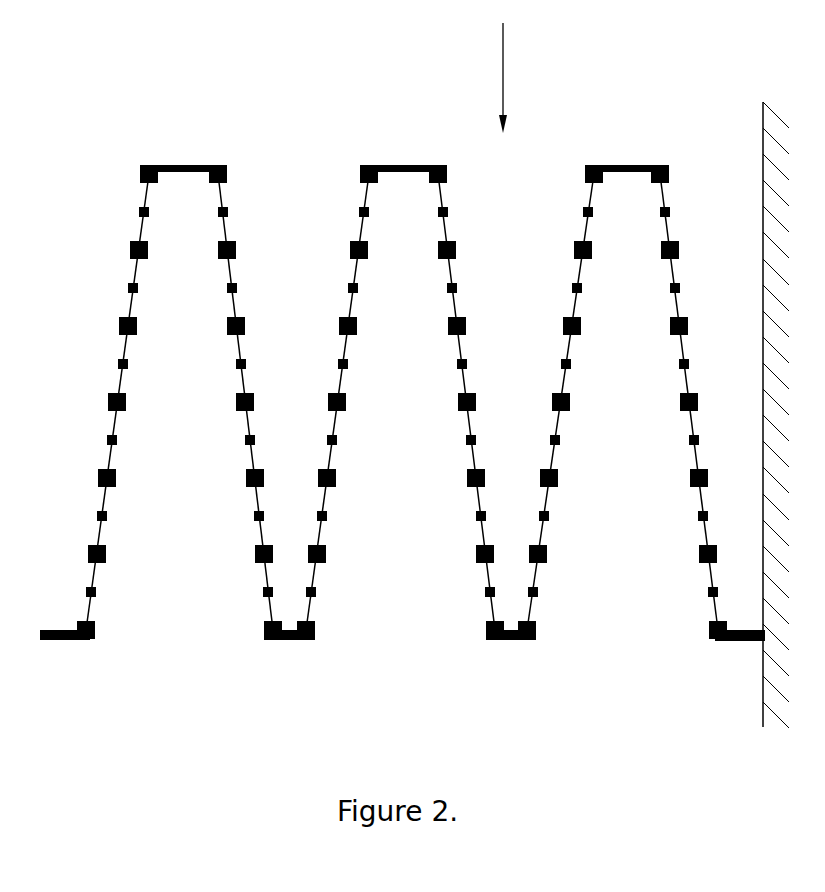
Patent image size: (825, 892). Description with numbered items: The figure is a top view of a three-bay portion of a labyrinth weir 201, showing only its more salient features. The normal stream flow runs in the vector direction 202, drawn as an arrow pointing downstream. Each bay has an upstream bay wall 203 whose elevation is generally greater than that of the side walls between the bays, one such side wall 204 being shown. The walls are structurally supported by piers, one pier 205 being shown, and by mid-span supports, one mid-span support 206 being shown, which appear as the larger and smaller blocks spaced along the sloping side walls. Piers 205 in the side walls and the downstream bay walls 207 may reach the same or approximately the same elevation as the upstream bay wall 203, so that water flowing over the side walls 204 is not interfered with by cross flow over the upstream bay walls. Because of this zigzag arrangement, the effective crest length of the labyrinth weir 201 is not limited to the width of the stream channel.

The labyrinth weir 201 is at (397, 382).
The vector direction of normal stream flow 202 is at (475, 78).
The upstream bay wall 203 is at (620, 162).
The side wall 204 is at (132, 270).
The pier 205 is at (688, 324).
The mid-span support 206 is at (669, 290).
The downstream bay wall 207 is at (521, 643).